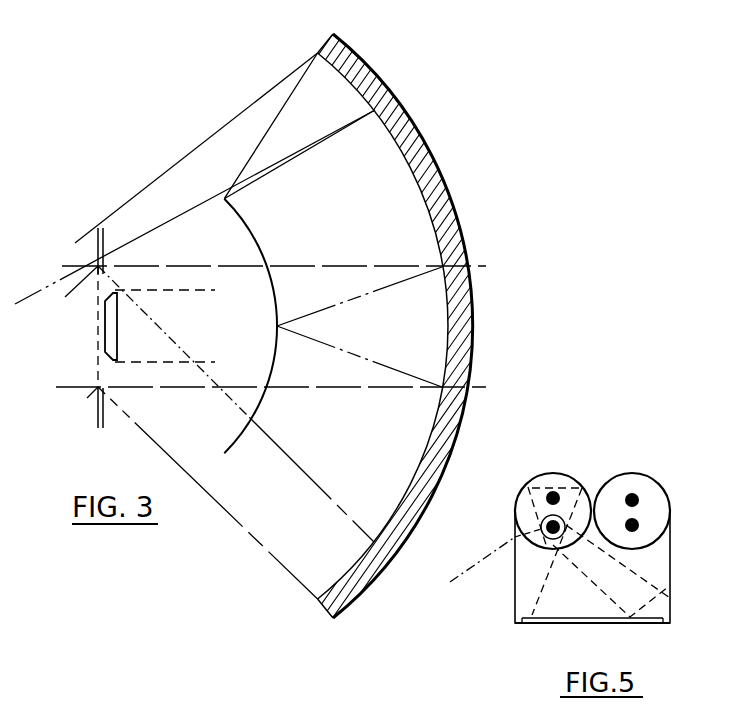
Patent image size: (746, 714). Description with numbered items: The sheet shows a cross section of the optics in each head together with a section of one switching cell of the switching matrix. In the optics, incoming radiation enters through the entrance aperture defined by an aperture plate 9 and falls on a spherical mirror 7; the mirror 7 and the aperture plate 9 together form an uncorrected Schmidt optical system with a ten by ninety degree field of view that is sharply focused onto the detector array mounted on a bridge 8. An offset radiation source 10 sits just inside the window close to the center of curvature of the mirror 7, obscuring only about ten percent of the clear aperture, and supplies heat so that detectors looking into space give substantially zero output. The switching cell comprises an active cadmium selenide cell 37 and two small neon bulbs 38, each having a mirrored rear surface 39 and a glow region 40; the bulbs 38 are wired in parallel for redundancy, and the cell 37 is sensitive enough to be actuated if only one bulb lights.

In FIG. 3, the spherical mirror 7 is at (467, 410).
In FIG. 3, the bridge 8 is at (262, 402).
In FIG. 3, the aperture plate 9 is at (98, 424).
In FIG. 3, the offset radiation source 10 is at (105, 322).
In FIG. 5, the cadmium selenide cell 37 is at (575, 623).
In FIG. 5, the neon bulbs 38 is at (520, 508).
In FIG. 5, the mirrored rear surfaces 39 is at (556, 478).
In FIG. 5, the glow regions 40 is at (547, 540).